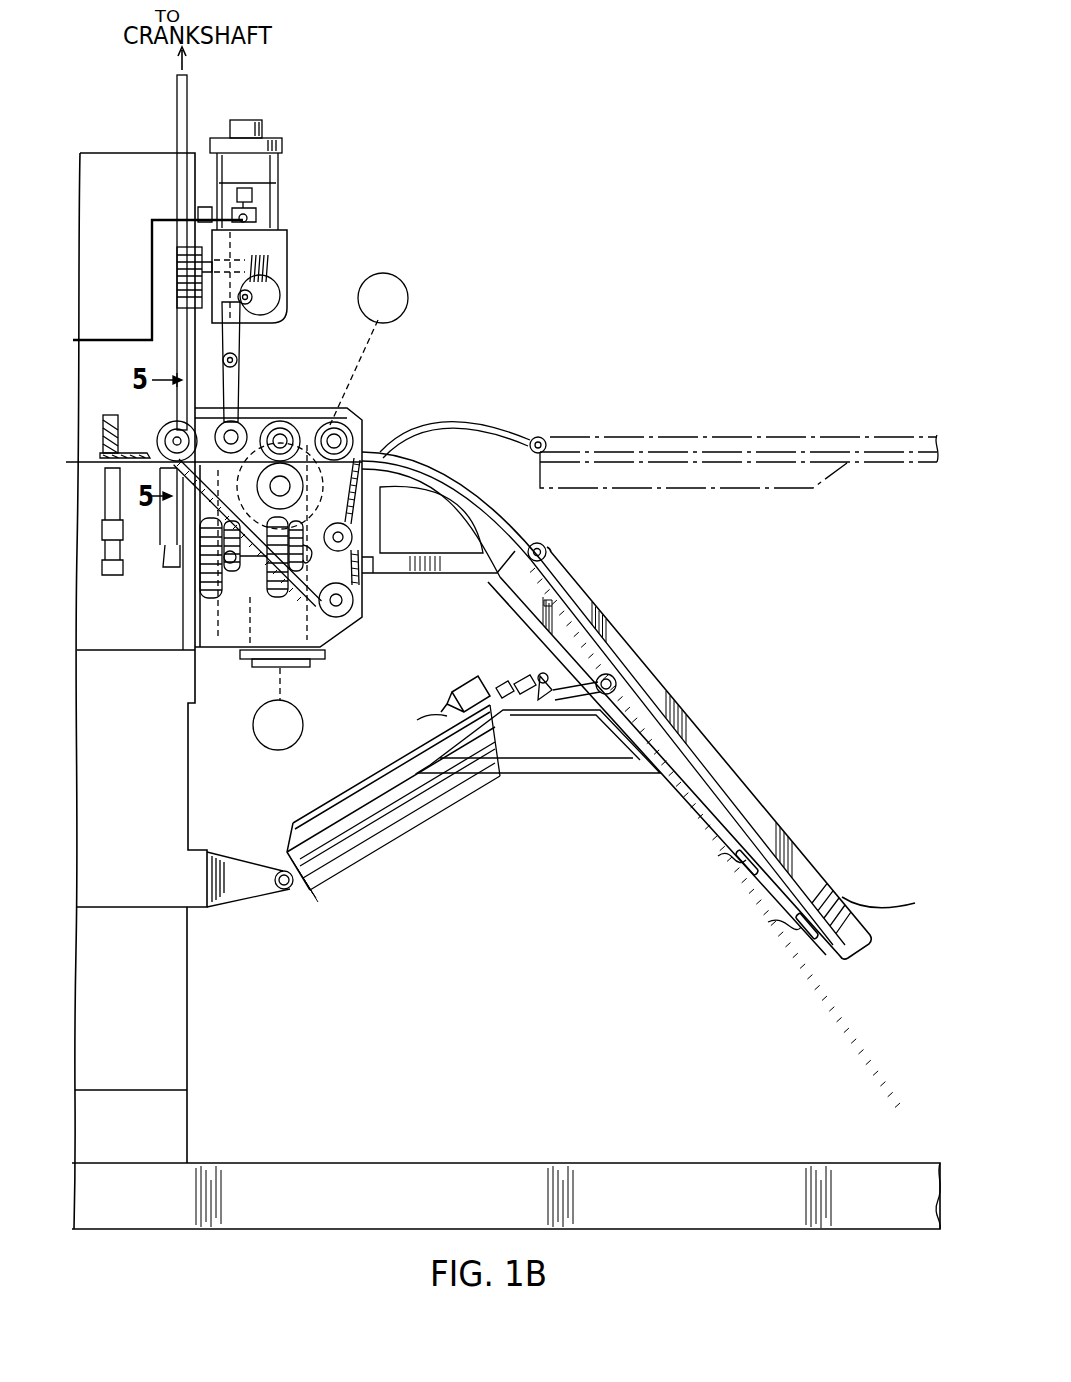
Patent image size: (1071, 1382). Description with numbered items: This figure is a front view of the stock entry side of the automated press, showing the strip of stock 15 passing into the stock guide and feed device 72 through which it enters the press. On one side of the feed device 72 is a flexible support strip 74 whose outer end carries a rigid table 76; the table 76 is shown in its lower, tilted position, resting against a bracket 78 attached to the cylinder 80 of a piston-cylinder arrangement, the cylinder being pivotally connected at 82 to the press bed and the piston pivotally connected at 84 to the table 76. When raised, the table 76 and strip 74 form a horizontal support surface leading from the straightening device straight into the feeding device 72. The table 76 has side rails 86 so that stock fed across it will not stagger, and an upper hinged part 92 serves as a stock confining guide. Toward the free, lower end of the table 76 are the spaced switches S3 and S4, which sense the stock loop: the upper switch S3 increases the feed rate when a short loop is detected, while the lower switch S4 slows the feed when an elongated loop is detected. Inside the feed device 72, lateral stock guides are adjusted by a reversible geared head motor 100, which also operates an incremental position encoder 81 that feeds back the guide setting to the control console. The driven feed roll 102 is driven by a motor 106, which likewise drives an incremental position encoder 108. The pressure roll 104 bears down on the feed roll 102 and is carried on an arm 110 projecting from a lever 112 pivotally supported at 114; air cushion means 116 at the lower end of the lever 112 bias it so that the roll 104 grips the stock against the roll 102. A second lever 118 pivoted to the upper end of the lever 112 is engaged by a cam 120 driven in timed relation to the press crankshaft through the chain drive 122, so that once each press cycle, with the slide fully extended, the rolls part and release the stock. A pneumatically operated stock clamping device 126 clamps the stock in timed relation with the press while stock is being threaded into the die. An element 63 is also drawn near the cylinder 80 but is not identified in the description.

The strip of stock 15 is at (894, 905).
The sensor switch 63 is at (476, 696).
The stock guide and feed device 72 is at (347, 404).
The flexible support strip 74 is at (503, 545).
The rigid table 76 is at (807, 445).
The bracket 78 is at (583, 767).
The cylinder 80 is at (422, 822).
The incremental position encoder 81 is at (278, 742).
The pivotal connection of cylinder 82 is at (287, 892).
The pivotal connection of piston 84 is at (614, 677).
The side rails 86 is at (762, 805).
The upper hinged part 92 is at (497, 517).
The reversible geared head motor 100 is at (306, 665).
The driven feed roll 102 is at (350, 430).
The pressure roll 104 is at (287, 473).
The motor 106 is at (330, 508).
The incremental position encoder 108 is at (400, 298).
The arm 110 is at (253, 428).
The lever 112 is at (243, 362).
The pivot 114 is at (222, 410).
The air cushion means 116 is at (278, 592).
The second lever 118 is at (238, 336).
The cam 120 is at (272, 290).
The chain drive 122 is at (190, 103).
The pneumatically operated stock clamping device 126 is at (115, 497).
The switch S3 is at (755, 868).
The switch S4 is at (817, 933).